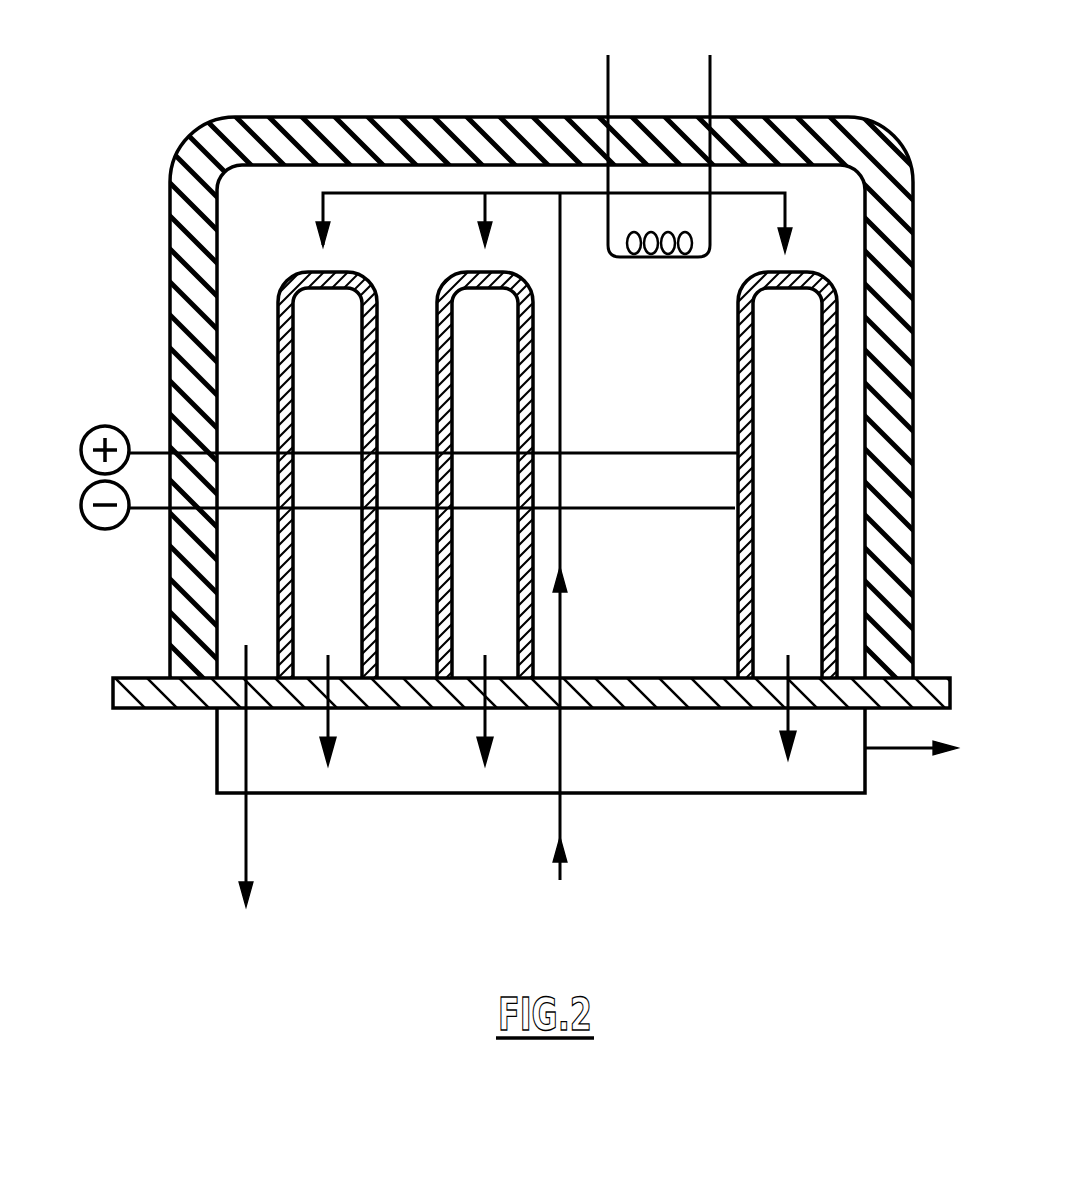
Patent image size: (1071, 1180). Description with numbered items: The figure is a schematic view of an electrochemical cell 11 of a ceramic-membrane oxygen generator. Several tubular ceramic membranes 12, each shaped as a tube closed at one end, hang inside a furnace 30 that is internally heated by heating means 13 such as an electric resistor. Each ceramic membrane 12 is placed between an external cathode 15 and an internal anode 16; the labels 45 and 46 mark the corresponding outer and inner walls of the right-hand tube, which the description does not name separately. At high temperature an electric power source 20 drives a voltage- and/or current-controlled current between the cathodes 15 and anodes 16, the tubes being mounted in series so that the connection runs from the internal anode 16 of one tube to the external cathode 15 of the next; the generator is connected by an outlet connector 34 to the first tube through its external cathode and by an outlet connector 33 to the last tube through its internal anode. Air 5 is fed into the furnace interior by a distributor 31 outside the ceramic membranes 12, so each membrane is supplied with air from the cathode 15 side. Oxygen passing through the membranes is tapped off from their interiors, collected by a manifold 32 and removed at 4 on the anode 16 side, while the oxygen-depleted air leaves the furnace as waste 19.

The oxygen removal outlet 4 is at (888, 752).
The air 5 is at (565, 818).
The electrochemical cell 11 is at (535, 340).
The ceramic membrane 12 is at (535, 431).
The heating means 13 is at (676, 258).
The cathode 15 is at (282, 410).
The anode 16 is at (298, 462).
The waste 19 is at (250, 830).
The electric power source 20 is at (399, 485).
The furnace 30 is at (415, 130).
The distributor 31 is at (505, 192).
The manifold 32 is at (398, 794).
The outlet connector 33 is at (152, 447).
The outlet connector 34 is at (148, 512).
The outer wall of third electrode 45 is at (737, 432).
The inner wall of third electrode 46 is at (822, 445).